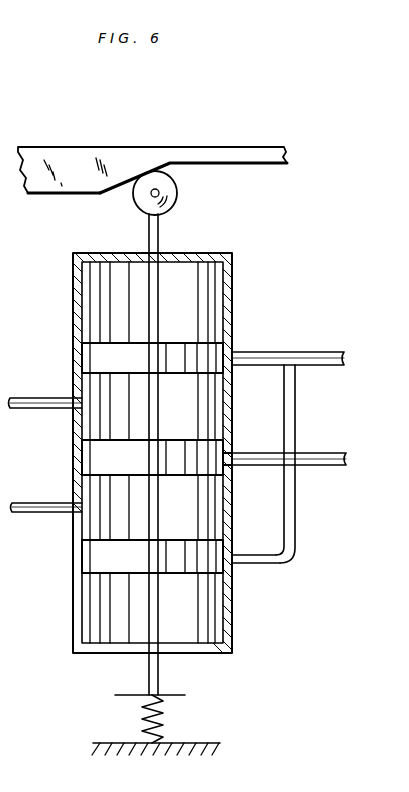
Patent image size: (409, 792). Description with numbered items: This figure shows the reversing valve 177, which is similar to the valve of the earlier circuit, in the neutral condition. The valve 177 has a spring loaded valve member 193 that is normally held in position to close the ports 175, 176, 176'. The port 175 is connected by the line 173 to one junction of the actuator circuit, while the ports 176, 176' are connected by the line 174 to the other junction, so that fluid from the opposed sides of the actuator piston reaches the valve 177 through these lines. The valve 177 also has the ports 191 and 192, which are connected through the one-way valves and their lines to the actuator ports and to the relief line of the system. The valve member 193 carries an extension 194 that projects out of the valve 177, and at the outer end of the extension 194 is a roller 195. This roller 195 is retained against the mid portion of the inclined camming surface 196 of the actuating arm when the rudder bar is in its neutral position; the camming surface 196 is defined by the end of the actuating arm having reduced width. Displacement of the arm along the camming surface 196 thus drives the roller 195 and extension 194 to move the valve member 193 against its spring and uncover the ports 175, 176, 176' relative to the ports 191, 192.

The line 173 is at (333, 444).
The line 174 is at (322, 334).
The port 175 is at (232, 466).
The port 176 is at (265, 464).
The port 176' is at (259, 584).
The valve 177 is at (64, 600).
The port 191 is at (70, 398).
The port 192 is at (70, 502).
The valve member 193 is at (186, 405).
The extension 194 is at (161, 227).
The roller 195 is at (141, 208).
The inclined camming surface 196 is at (118, 192).